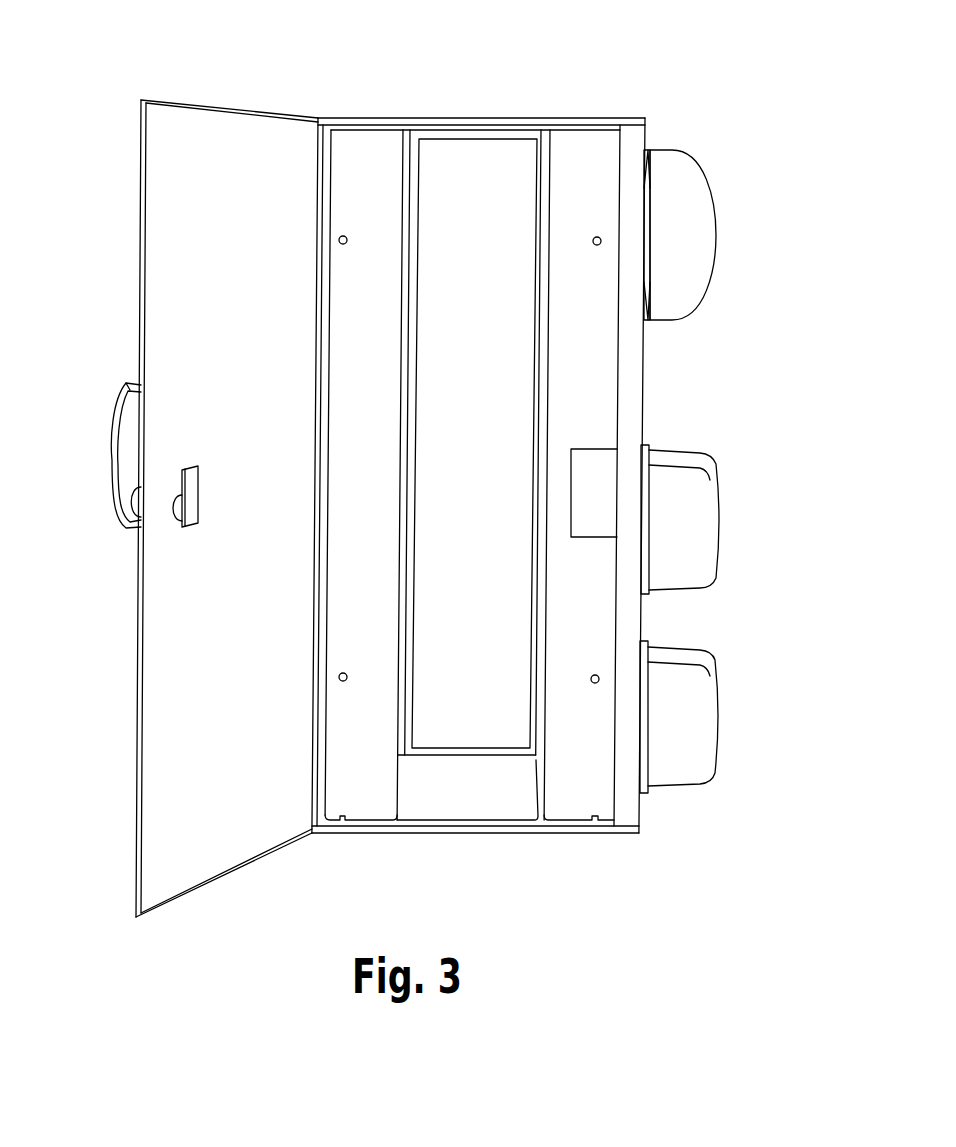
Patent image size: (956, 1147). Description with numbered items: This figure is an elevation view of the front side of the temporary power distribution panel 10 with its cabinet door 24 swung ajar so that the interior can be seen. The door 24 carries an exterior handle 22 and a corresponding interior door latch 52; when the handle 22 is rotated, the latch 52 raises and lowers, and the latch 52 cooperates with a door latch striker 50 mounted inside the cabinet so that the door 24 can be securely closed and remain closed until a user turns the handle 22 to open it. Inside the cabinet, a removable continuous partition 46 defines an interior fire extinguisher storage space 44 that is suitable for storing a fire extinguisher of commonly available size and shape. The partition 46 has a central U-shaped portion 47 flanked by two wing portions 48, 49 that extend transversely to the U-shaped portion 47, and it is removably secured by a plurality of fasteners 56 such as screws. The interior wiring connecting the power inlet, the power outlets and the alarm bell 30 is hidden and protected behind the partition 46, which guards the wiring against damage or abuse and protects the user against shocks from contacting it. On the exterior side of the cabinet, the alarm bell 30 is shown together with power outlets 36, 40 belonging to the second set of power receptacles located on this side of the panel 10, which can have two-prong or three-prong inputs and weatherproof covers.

The temporary power distribution panel 10 is at (733, 48).
The exterior handle 22 is at (120, 470).
The cabinet door 24 is at (203, 277).
The alarm bell 30 is at (685, 212).
The power outlet 36 is at (700, 520).
The power outlet 40 is at (695, 740).
The interior fire extinguisher storage space 44 is at (470, 165).
The removable continuous partition 46 is at (438, 135).
The central U-shaped portion 47 is at (458, 730).
The wing portion 48 is at (565, 806).
The wing portion 49 is at (349, 806).
The door latch striker 50 is at (598, 462).
The interior door latch 52 is at (192, 477).
The fasteners 56 is at (343, 236).